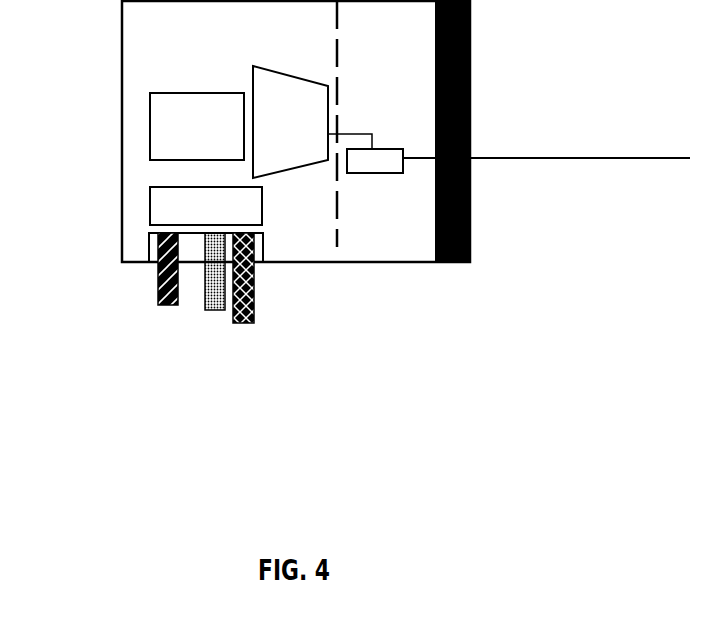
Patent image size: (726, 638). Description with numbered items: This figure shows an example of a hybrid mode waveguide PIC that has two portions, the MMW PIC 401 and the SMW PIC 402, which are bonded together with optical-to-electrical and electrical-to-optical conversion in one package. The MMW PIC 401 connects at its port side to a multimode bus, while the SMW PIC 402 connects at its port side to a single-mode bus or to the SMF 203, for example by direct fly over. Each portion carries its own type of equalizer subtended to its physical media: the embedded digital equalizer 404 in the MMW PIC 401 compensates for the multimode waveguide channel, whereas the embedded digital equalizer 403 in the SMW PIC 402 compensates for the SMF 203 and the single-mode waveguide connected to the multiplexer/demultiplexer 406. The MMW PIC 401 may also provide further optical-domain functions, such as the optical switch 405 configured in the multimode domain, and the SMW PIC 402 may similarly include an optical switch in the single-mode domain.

The MMW PIC 401 is at (190, 48).
The SMW PIC 402 is at (392, 38).
The embedded digital equalizer 403 is at (365, 168).
The embedded digital equalizer 404 is at (158, 120).
The optical switch 405 is at (223, 216).
The multiplexer/demultiplexer 406 is at (308, 131).
The SMF 203 is at (546, 144).